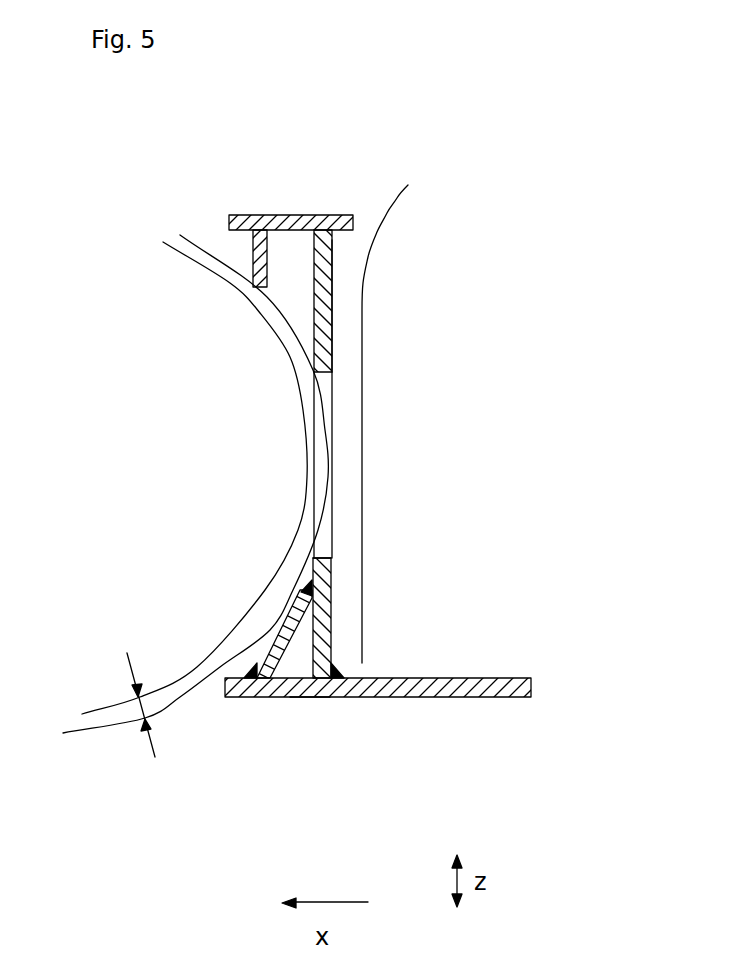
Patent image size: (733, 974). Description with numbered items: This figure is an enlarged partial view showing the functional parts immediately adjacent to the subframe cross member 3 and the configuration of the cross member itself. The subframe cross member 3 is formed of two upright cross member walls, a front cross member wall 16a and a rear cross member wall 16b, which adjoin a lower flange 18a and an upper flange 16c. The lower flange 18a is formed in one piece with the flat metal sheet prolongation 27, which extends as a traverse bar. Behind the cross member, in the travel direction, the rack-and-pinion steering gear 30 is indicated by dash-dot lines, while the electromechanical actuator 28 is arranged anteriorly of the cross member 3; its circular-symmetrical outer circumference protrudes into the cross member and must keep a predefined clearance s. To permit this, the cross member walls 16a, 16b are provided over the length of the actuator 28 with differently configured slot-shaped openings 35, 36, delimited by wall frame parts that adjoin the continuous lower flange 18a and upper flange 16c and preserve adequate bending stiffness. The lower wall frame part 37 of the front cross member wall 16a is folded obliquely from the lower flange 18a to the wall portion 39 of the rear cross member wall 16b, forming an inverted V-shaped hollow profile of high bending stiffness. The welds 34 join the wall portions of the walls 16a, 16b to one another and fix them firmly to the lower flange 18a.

The subframe cross member 3 is at (321, 359).
The front cross member wall 16a is at (250, 252).
The rear cross member wall 16b is at (333, 273).
The upper flange 16c is at (249, 215).
The lower flange 18a is at (306, 697).
The flat metal sheet prolongation 27 is at (516, 673).
The electromechanical actuator 28 is at (98, 708).
The steering gear 30 is at (397, 201).
The welds 34 is at (310, 590).
The slot-shaped opening 35 is at (334, 399).
The slot-shaped opening 36 is at (332, 387).
The lower wall frame part 37 is at (262, 595).
The wall portion 39 is at (332, 619).